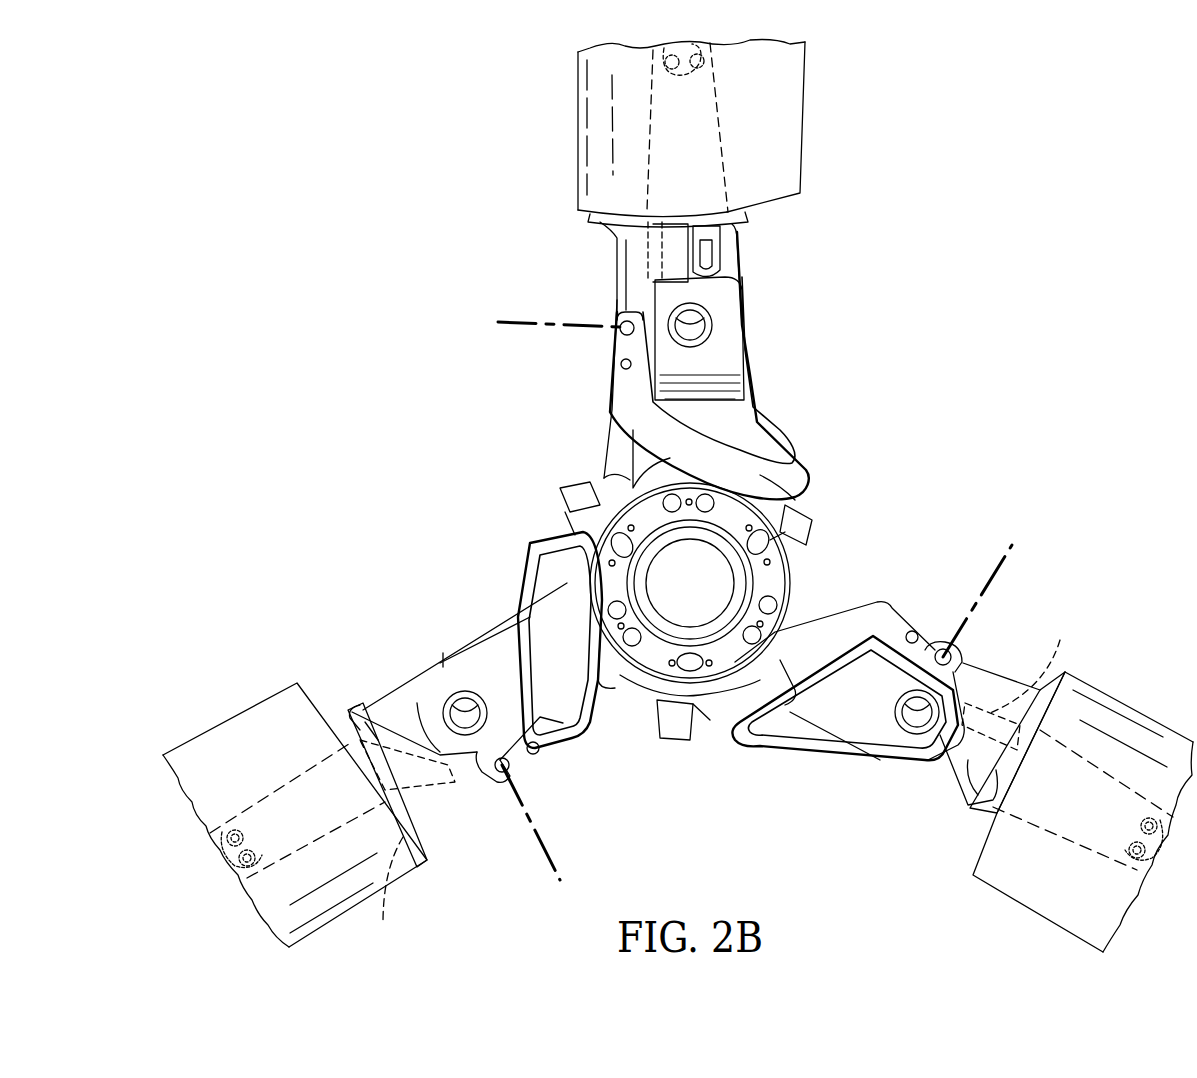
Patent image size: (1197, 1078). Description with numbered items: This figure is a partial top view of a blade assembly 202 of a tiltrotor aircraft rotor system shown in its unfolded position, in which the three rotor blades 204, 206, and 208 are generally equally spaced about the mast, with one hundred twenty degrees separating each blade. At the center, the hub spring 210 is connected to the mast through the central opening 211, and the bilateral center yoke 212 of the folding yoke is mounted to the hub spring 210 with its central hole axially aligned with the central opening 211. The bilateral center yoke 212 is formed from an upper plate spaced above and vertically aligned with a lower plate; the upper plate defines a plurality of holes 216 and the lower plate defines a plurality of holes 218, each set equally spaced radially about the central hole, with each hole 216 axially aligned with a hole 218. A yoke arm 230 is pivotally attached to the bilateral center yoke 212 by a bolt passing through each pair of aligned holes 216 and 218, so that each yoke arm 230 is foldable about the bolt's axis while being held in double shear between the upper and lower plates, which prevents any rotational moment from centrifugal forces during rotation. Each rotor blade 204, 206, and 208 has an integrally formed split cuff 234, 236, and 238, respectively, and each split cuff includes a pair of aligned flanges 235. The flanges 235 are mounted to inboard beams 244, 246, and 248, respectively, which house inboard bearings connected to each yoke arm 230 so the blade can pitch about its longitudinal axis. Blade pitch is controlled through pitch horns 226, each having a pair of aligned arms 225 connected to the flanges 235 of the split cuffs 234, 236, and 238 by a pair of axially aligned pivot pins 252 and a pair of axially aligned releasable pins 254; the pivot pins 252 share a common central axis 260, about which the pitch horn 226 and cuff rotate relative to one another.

The blade assembly 202 is at (1005, 266).
The rotor blade 204 is at (582, 136).
The rotor blade 206 is at (1125, 699).
The rotor blade 208 is at (262, 702).
The hub spring 210 is at (802, 572).
The central opening 211 is at (660, 540).
The bilateral center yoke 212 is at (790, 698).
The holes 216 is at (718, 337).
The holes 218 is at (702, 326).
The arms 225 is at (756, 382).
The pitch horn 226 is at (564, 492).
The yoke arm 230 is at (722, 102).
The split cuff 234 is at (612, 288).
The flanges 235 is at (746, 274).
The split cuff 236 is at (978, 670).
The split cuff 238 is at (440, 846).
The inboard beam 244 is at (608, 266).
The inboard beam 246 is at (1060, 668).
The inboard beam 248 is at (380, 884).
The pivot pins 252 is at (620, 330).
The releasable pins 254 is at (620, 366).
The central axis 260 is at (516, 322).